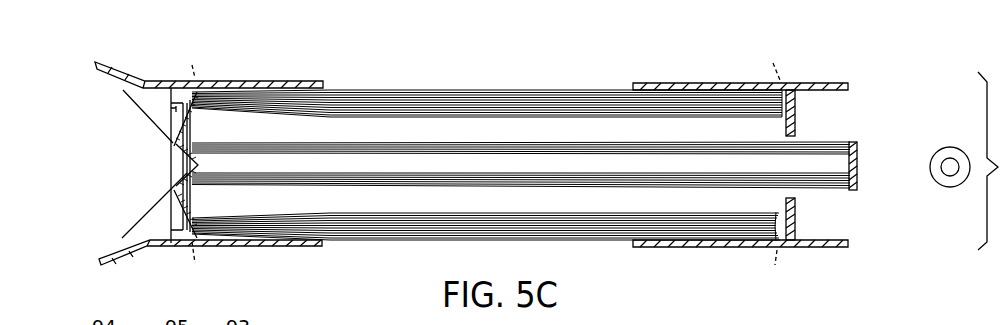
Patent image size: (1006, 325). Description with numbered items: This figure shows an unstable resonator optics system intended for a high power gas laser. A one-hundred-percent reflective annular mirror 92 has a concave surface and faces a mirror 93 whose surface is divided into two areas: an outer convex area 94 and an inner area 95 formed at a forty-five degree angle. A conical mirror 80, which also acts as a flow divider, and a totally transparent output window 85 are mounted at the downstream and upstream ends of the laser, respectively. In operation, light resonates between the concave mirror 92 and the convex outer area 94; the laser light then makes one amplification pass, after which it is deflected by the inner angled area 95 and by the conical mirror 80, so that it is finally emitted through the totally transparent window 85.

The conical mirror 80 is at (185, 165).
The totally transparent output window 85 is at (858, 185).
The reflective annular mirror 92 is at (785, 100).
The mirror 93 is at (180, 233).
The outer convex area 94 is at (195, 101).
The inner 45° angle area 95 is at (178, 109).